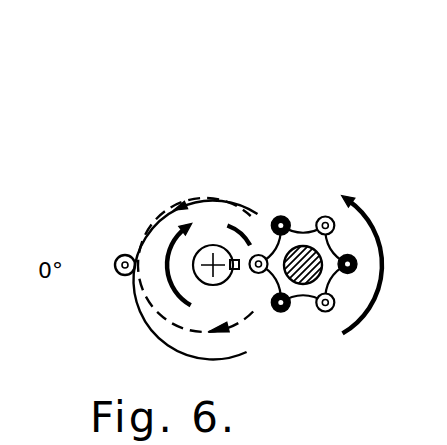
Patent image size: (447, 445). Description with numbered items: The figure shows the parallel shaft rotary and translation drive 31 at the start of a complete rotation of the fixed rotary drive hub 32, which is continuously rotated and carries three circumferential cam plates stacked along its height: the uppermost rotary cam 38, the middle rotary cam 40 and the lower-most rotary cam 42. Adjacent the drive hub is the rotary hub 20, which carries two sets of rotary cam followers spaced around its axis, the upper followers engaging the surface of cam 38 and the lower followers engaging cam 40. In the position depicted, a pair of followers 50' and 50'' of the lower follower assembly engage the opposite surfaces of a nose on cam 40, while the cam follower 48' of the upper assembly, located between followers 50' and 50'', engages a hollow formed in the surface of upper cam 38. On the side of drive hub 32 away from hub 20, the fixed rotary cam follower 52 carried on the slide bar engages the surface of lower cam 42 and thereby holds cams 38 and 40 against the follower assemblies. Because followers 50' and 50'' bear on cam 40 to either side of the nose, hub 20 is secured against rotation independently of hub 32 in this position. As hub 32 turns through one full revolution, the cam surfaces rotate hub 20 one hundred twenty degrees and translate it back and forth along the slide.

The parallel shaft rotary and translation drive 31 is at (152, 82).
The uppermost rotary cam 38 is at (248, 352).
The lower-most rotary cam 42 is at (187, 203).
The fixed rotary drive hub 32 is at (210, 205).
The rotary cam 40 is at (233, 210).
The rotary hub 20 is at (302, 226).
The cam follower 48' is at (277, 195).
The cam follower 50'' is at (292, 197).
The cam follower 50' is at (301, 332).
The fixed rotary cam follower 52 is at (124, 276).